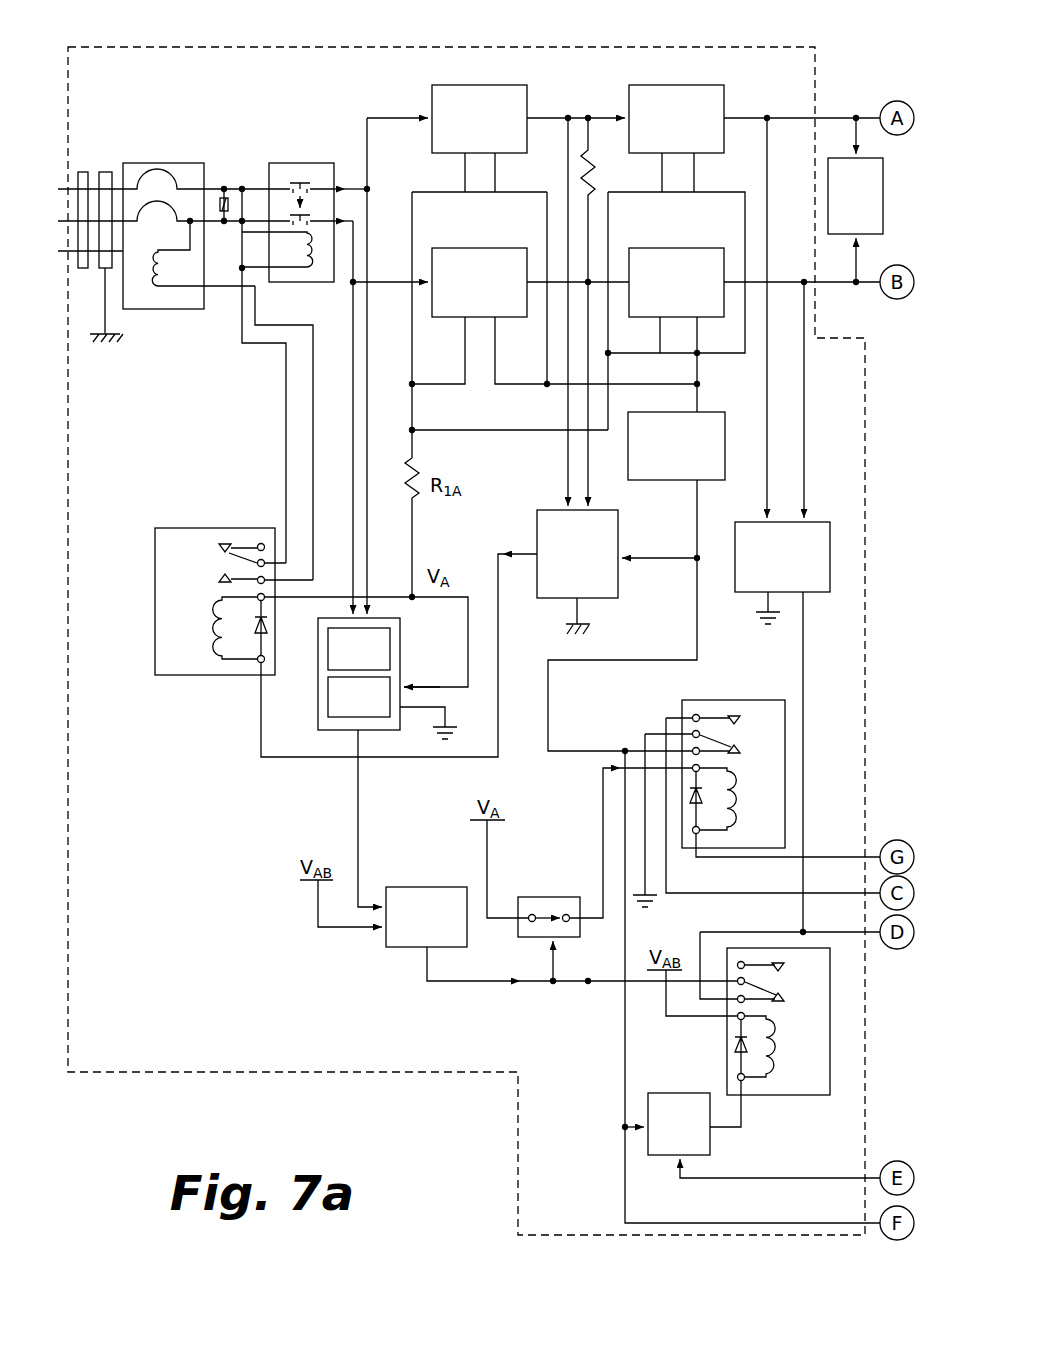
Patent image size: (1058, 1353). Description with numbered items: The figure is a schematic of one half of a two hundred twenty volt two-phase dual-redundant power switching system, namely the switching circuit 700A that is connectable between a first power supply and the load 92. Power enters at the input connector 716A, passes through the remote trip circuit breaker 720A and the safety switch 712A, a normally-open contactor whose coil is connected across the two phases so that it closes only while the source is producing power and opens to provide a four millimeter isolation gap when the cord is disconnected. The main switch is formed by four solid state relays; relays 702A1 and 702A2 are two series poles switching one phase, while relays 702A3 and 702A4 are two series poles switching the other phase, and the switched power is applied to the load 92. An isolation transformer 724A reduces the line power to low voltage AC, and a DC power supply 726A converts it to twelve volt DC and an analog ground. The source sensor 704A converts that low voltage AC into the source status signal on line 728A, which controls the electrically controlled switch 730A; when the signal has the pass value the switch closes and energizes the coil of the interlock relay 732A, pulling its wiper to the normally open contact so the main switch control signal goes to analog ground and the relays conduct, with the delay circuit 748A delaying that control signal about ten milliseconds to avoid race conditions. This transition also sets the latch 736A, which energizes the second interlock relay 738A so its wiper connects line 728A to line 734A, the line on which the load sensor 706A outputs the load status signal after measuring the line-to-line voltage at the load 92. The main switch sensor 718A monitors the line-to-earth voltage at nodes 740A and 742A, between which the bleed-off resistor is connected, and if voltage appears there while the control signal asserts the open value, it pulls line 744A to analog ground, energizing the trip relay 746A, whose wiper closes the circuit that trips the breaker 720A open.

The switching circuit 700A is at (310, 65).
The input connector 716A is at (85, 170).
The remote trip circuit breaker 720A is at (158, 163).
The safety switch 712A is at (290, 163).
The solid state relay 702A1 is at (479, 119).
The solid state relay 702A2 is at (676, 119).
The solid state relay 702A3 is at (479, 282).
The solid state relay 702A4 is at (676, 282).
The node 740A is at (568, 102).
The node 742A is at (592, 278).
The load 92 is at (855, 200).
The delay circuit 748A is at (676, 446).
The main switch sensor 718A is at (577, 572).
The load sensor 706A is at (782, 573).
The trip relay 746A is at (214, 528).
The isolation transformer 724A is at (359, 674).
The DC power supply 726A is at (392, 708).
The line 744A is at (287, 760).
The line 728A is at (473, 983).
The source sensor 704A is at (426, 917).
The electrically controlled switch 730A is at (556, 897).
The interlock relay 732A is at (706, 714).
The line 734A is at (803, 725).
The latch 736A is at (752, 1135).
The second interlock relay 738A is at (765, 1095).